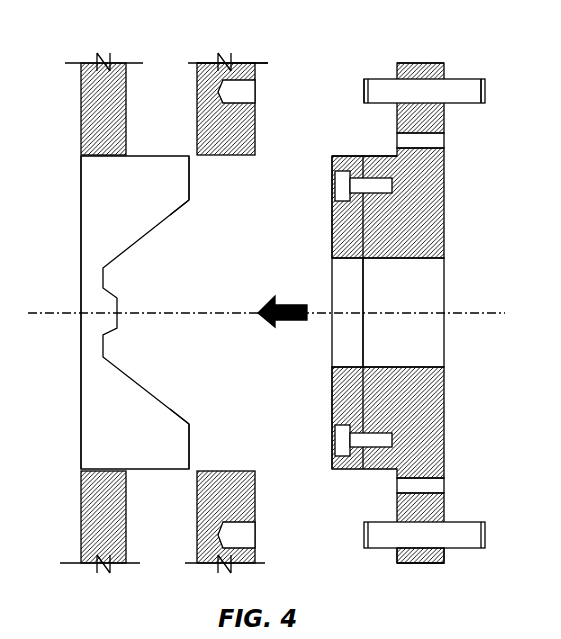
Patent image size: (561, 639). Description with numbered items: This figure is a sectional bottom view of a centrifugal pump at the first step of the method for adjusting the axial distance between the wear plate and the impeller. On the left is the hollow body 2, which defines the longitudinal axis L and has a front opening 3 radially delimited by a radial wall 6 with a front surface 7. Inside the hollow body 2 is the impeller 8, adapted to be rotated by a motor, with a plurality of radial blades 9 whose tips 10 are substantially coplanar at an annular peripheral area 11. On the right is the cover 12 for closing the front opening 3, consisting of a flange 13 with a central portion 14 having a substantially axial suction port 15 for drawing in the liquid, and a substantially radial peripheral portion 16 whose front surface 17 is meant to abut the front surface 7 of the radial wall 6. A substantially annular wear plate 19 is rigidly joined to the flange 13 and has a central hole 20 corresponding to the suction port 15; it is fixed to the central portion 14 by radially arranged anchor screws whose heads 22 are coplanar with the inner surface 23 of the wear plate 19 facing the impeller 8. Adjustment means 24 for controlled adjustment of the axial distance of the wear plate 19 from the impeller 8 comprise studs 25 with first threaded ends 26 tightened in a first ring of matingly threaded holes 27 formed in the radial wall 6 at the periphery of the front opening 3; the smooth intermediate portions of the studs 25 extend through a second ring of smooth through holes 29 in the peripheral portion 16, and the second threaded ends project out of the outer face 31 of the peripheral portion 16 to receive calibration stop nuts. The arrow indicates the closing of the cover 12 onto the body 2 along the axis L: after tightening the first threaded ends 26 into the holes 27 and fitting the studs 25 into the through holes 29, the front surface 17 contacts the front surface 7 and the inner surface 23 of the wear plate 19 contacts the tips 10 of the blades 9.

The hollow body 2 is at (132, 60).
The front opening 3 is at (250, 190).
The radial wall 6 is at (213, 62).
The front surface 7 is at (255, 68).
The impeller 8 is at (100, 210).
The radial blades 9 is at (150, 170).
The tips 10 is at (192, 198).
The annular peripheral area 11 is at (194, 176).
The cover 12 is at (418, 60).
The flange 13 is at (446, 238).
The central portion 14 is at (388, 165).
The suction port 15 is at (432, 287).
The peripheral portion 16 is at (446, 70).
The front surface 17 is at (397, 65).
The wear plate 19 is at (325, 247).
The central hole 20 is at (350, 283).
The heads 22 is at (335, 190).
The inner surface 23 is at (333, 387).
The adjustment means 24 is at (470, 522).
The studs 25 is at (448, 90).
The first threaded ends 26 is at (364, 90).
The matingly threaded holes 27 is at (245, 92).
The smooth through holes 29 is at (432, 548).
The outer face 31 is at (446, 465).
The longitudinal axis L is at (197, 311).